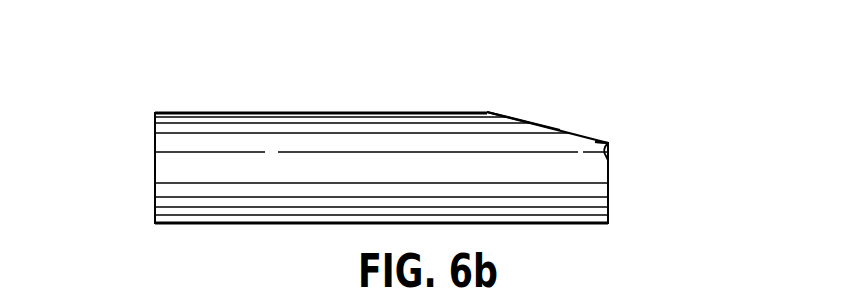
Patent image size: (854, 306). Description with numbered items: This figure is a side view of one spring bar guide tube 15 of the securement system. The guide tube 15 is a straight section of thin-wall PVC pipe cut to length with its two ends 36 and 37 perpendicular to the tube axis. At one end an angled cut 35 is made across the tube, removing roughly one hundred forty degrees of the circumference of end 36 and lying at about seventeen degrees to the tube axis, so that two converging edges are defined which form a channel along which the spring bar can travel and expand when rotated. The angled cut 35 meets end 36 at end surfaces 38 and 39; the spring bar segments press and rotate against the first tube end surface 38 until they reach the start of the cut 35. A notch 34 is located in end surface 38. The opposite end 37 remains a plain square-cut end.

The guide tube 15 is at (347, 133).
The notch 34 is at (608, 151).
The angled cut 35 is at (539, 124).
The tube end 36 is at (608, 198).
The tube end 37 is at (155, 168).
The first tube end surface 38 is at (608, 143).
The end surface 39 is at (601, 151).